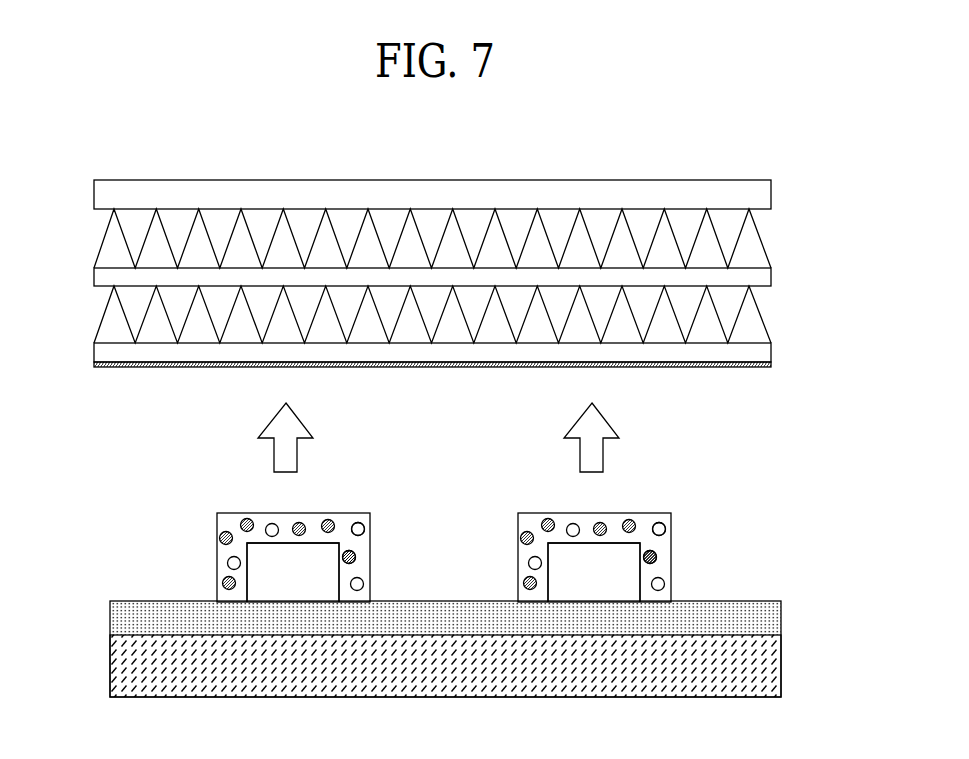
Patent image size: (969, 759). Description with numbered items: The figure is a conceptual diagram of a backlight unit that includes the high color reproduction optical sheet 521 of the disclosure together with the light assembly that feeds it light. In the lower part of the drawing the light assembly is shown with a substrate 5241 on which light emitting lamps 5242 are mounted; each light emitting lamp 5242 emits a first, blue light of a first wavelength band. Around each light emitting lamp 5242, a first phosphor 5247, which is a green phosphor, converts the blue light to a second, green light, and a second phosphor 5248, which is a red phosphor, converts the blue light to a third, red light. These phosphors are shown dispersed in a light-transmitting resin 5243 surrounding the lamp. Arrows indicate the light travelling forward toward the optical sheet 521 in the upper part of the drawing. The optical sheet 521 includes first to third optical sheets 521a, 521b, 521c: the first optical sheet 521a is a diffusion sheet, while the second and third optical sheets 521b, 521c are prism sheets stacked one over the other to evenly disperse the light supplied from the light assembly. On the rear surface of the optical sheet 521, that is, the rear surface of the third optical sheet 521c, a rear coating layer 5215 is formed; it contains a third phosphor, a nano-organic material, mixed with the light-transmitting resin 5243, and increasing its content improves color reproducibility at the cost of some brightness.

The optical sheet 521 is at (437, 277).
The first optical sheet 521a is at (105, 195).
The second optical sheet 521b is at (105, 253).
The third optical sheet 521c is at (105, 335).
The rear coating layer 5215 is at (102, 363).
The substrate 5241 is at (123, 621).
The light emitting lamp 5242 is at (258, 574).
The light-transmitting resin 5243 is at (371, 572).
The first phosphor 5247 is at (353, 556).
The second phosphor 5248 is at (362, 526).